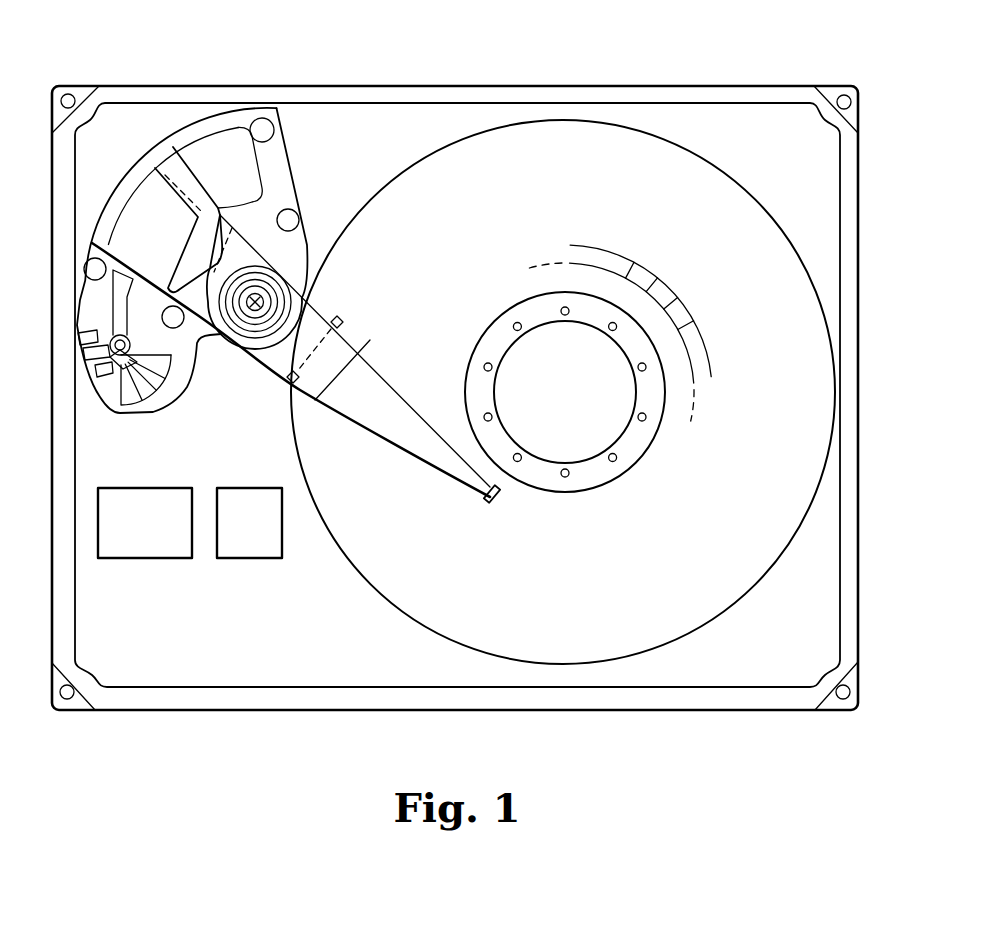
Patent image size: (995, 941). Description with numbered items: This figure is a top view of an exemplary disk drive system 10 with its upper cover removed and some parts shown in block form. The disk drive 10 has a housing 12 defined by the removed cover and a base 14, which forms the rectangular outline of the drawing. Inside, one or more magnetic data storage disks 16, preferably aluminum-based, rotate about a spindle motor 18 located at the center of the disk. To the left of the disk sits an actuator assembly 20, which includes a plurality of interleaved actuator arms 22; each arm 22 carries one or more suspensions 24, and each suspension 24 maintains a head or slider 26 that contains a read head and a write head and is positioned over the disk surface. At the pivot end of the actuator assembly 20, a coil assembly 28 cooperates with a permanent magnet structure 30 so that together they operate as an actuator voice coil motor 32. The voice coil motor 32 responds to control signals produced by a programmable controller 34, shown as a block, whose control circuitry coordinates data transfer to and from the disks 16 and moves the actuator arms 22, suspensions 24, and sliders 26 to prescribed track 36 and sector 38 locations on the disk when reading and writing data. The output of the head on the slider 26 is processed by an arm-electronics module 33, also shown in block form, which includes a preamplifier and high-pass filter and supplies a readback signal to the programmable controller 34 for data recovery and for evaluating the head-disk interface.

The disk drive system 10 is at (455, 389).
The housing 12 is at (270, 717).
The base 14 is at (790, 180).
The magnetic data storage disk 16 is at (588, 196).
The spindle motor 18 is at (584, 484).
The actuator assembly 20 is at (313, 385).
The actuator arm 22 is at (274, 358).
The suspension 24 is at (355, 407).
The slider 26 is at (501, 498).
The coil assembly 28 is at (126, 184).
The permanent magnet structure 30 is at (273, 158).
The voice coil motor 32 is at (244, 211).
The arm-electronics module 33 is at (240, 536).
The programmable controller 34 is at (134, 536).
The track 36 is at (704, 367).
The sector 38 is at (683, 317).